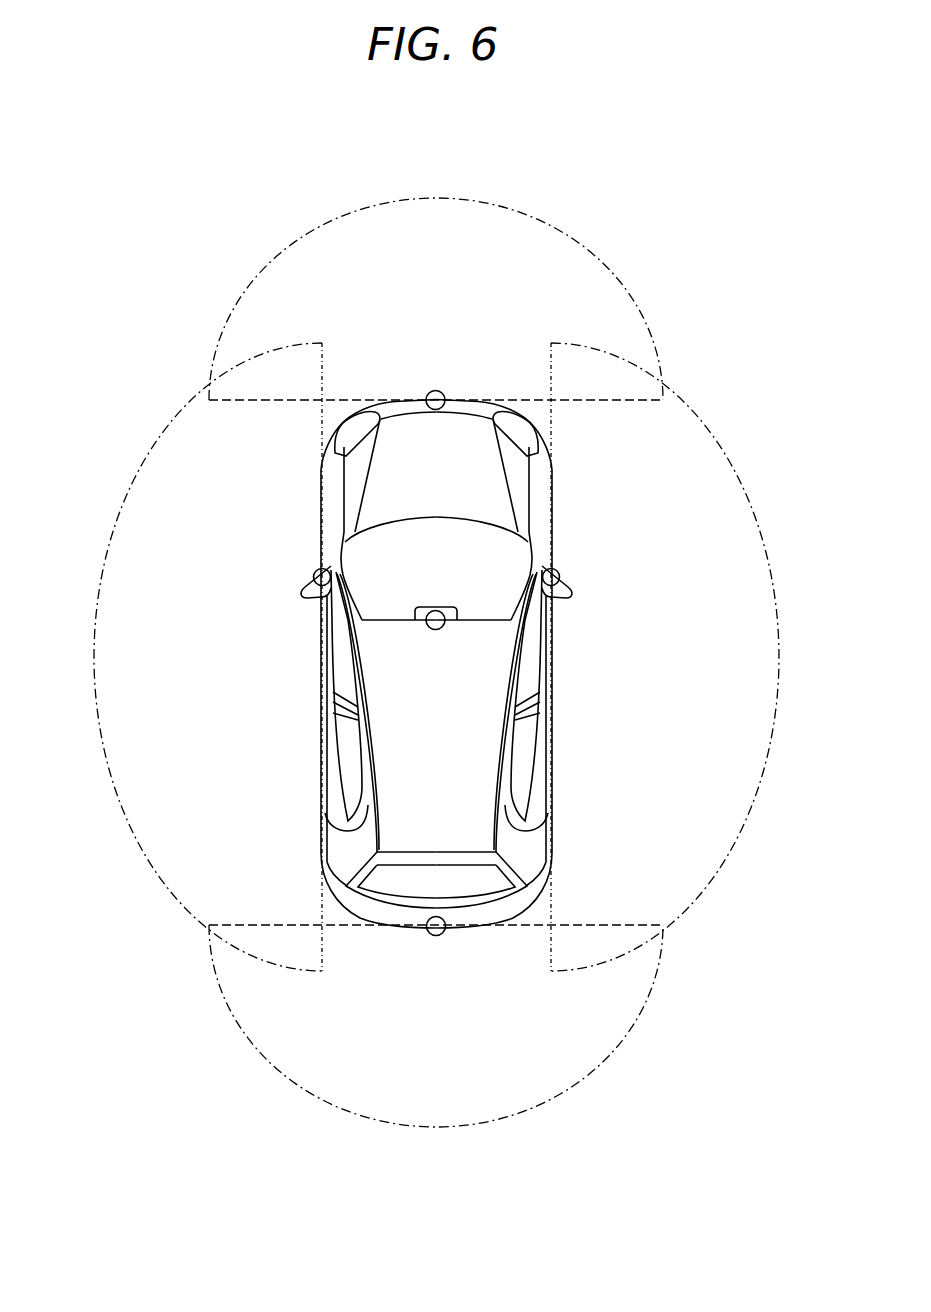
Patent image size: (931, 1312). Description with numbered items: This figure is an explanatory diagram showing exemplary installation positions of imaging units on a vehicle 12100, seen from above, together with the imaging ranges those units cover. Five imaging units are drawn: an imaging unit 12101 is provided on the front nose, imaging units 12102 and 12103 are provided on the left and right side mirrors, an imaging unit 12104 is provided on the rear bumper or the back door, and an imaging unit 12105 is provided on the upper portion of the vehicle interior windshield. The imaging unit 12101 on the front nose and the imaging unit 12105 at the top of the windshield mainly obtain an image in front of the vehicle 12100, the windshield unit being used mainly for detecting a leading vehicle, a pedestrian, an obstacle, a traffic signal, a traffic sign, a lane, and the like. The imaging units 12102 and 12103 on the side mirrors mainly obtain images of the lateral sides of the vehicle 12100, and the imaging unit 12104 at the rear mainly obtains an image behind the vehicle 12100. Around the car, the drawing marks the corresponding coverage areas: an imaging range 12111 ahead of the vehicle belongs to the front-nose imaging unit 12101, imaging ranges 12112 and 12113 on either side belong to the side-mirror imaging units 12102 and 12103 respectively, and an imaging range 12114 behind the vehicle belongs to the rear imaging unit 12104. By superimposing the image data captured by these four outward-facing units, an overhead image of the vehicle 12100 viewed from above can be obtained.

The vehicle 12100 is at (331, 506).
The imaging unit 12101 is at (436, 391).
The imaging unit 12102 is at (306, 578).
The imaging unit 12103 is at (560, 575).
The imaging unit 12104 is at (434, 936).
The imaging unit 12105 is at (443, 627).
The imaging range 12111 is at (437, 197).
The imaging range 12112 is at (148, 451).
The imaging range 12113 is at (724, 452).
The imaging range 12114 is at (434, 1130).